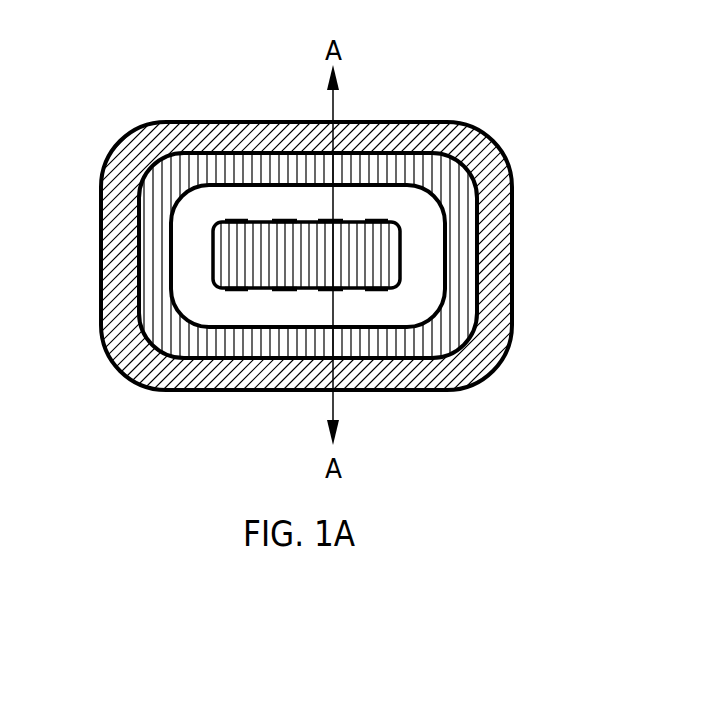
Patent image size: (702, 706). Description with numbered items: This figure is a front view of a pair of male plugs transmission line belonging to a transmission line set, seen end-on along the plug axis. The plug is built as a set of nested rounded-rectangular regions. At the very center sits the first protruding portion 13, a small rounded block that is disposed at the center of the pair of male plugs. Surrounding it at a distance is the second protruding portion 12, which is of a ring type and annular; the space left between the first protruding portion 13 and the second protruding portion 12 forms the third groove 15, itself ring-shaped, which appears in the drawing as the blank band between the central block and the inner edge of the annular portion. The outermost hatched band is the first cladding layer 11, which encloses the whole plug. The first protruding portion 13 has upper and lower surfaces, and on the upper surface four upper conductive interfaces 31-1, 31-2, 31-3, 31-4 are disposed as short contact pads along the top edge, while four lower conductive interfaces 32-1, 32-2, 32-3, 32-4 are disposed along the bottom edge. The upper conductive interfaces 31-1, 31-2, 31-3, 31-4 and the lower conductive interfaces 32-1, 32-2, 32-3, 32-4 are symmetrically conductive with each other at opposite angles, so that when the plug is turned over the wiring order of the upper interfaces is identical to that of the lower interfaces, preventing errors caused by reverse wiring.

The first cladding layer 11 is at (468, 142).
The second protruding portion 12 is at (155, 255).
The first protruding portion 13 is at (377, 262).
The third groove 15 is at (436, 255).
The upper conductive interface 31-1 is at (236, 221).
The upper conductive interface 31-2 is at (283, 221).
The upper conductive interface 31-3 is at (327, 221).
The upper conductive interface 31-4 is at (382, 221).
The lower conductive interface 32-1 is at (236, 289).
The lower conductive interface 32-2 is at (283, 289).
The lower conductive interface 32-3 is at (330, 289).
The lower conductive interface 32-4 is at (378, 289).